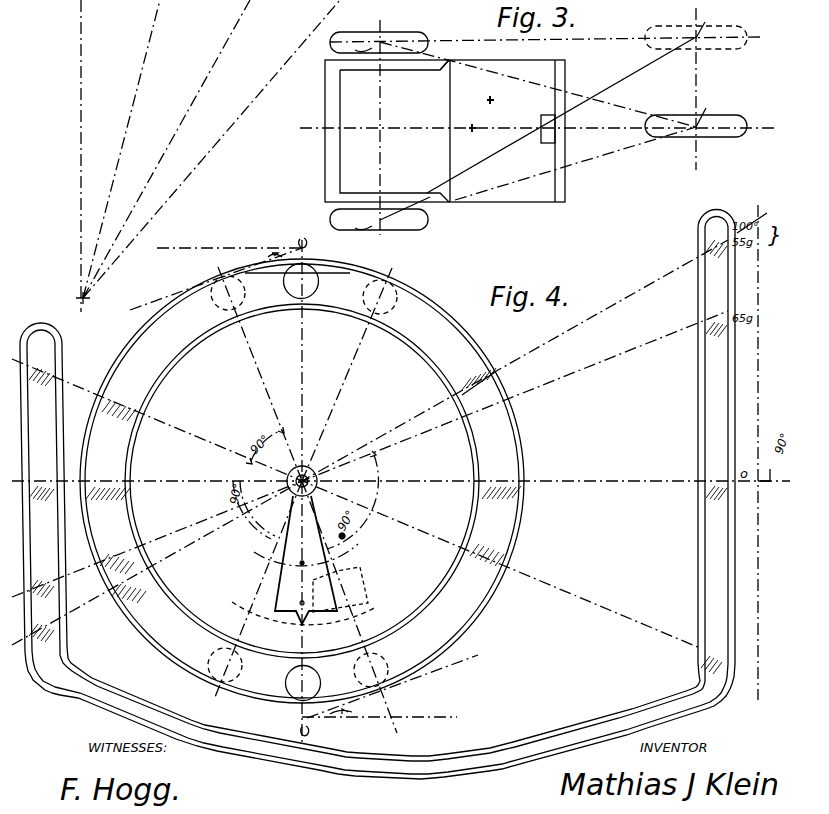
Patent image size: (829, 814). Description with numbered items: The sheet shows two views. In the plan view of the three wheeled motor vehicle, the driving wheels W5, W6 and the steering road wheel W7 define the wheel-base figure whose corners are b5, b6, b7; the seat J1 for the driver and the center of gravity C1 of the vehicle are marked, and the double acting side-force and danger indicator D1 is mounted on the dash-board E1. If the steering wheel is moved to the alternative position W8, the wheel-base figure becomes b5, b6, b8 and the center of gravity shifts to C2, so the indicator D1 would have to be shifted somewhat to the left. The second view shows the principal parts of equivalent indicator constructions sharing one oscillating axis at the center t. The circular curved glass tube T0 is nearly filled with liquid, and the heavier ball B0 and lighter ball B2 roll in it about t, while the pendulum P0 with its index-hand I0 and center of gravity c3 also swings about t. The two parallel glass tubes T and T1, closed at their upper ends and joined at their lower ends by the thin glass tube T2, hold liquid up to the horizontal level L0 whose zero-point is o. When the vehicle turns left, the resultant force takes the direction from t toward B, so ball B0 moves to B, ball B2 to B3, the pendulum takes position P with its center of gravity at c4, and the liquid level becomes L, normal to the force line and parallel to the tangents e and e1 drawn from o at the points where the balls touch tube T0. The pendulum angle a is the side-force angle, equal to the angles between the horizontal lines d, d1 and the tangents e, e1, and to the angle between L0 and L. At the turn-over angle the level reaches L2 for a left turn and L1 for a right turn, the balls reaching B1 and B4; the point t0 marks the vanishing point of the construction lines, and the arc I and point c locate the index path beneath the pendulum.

In FIG. 3, the driving wheel W5 is at (418, 48).
In FIG. 3, the driving wheel W6 is at (418, 228).
In FIG. 3, the steering road wheel W7 is at (730, 136).
In FIG. 3, the alternative steering wheel position W8 is at (740, 44).
In FIG. 3, the wheel-base point b5 is at (361, 43).
In FIG. 3, the wheel-base point b6 is at (361, 220).
In FIG. 3, the wheel-base point b7 is at (707, 108).
In FIG. 3, the wheel-base point b8 is at (707, 20).
In FIG. 3, the seat J1 is at (446, 96).
In FIG. 3, the center of gravity C1 is at (469, 128).
In FIG. 3, the center of gravity C2 is at (500, 98).
In FIG. 3, the double acting side-force and danger indicator D1 is at (541, 120).
In FIG. 3, the dash-board E1 is at (553, 68).
In FIG. 4, the center t is at (308, 471).
In FIG. 4, the vanishing point t0 is at (201, 156).
In FIG. 4, the glass tube T is at (698, 368).
In FIG. 4, the glass tube T1 is at (45, 336).
In FIG. 4, the thin glass tube T2 is at (440, 775).
In FIG. 4, the circular curved glass tube T0 is at (512, 442).
In FIG. 4, the liquid level L is at (612, 362).
In FIG. 4, the horizontal liquid level L0 is at (628, 479).
In FIG. 4, the turn-over liquid level L1 is at (636, 612).
In FIG. 4, the turn-over liquid level L2 is at (628, 288).
In FIG. 4, the horizontal line d is at (386, 717).
In FIG. 4, the horizontal line d1 is at (229, 240).
In FIG. 4, the tangent e is at (398, 681).
In FIG. 4, the tangent e1 is at (209, 283).
In FIG. 4, the zero-point o is at (301, 484).
In FIG. 4, the side-force angle a is at (306, 481).
In FIG. 4, the deflected ball position B is at (386, 670).
In FIG. 4, the heavier ball B0 is at (316, 692).
In FIG. 4, the turn-over ball position B1 is at (238, 674).
In FIG. 4, the lighter ball B2 is at (313, 294).
In FIG. 4, the deflected ball position B3 is at (244, 300).
In FIG. 4, the turn-over ball position B4 is at (392, 306).
In FIG. 4, the deflected pendulum position P is at (364, 586).
In FIG. 4, the pendulum P0 is at (280, 598).
In FIG. 4, the point c is at (301, 623).
In FIG. 4, the center of gravity c3 is at (306, 557).
In FIG. 4, the center of gravity c4 is at (346, 534).
In FIG. 4, the index arc I is at (362, 615).
In FIG. 4, the index-hand I0 is at (318, 630).